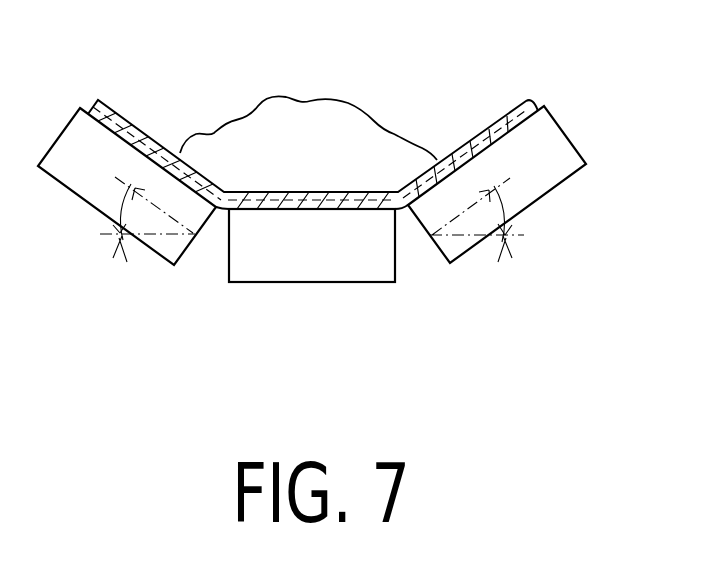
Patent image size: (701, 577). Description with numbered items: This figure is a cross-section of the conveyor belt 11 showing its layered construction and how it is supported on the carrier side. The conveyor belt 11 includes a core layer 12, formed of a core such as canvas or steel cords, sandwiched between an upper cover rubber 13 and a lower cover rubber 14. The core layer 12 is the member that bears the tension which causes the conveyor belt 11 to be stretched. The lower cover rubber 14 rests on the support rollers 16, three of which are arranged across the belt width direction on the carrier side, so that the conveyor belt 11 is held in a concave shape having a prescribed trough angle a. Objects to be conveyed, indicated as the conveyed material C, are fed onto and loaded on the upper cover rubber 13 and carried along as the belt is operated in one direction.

The conveyor belt 11 is at (169, 137).
The core layer 12 is at (143, 128).
The upper cover rubber 13 is at (452, 152).
The lower cover rubber 14 is at (272, 205).
The support roller 16 is at (72, 182).
The conveyed material C is at (304, 117).
The trough angle a is at (312, 219).